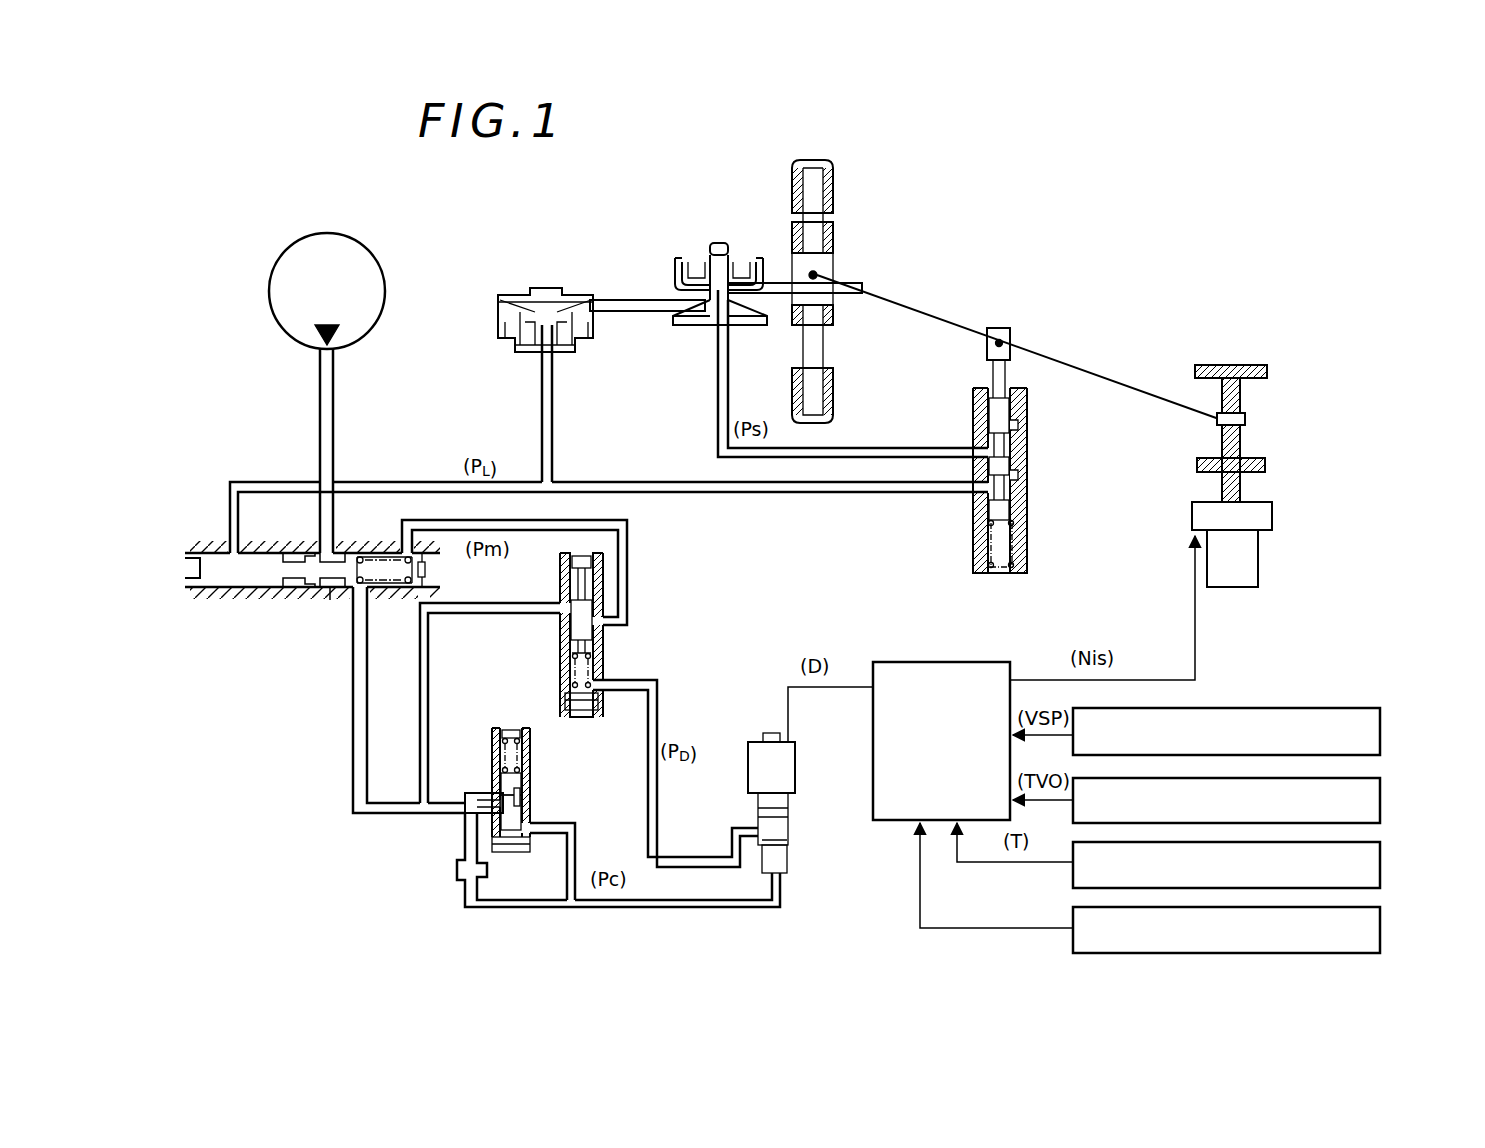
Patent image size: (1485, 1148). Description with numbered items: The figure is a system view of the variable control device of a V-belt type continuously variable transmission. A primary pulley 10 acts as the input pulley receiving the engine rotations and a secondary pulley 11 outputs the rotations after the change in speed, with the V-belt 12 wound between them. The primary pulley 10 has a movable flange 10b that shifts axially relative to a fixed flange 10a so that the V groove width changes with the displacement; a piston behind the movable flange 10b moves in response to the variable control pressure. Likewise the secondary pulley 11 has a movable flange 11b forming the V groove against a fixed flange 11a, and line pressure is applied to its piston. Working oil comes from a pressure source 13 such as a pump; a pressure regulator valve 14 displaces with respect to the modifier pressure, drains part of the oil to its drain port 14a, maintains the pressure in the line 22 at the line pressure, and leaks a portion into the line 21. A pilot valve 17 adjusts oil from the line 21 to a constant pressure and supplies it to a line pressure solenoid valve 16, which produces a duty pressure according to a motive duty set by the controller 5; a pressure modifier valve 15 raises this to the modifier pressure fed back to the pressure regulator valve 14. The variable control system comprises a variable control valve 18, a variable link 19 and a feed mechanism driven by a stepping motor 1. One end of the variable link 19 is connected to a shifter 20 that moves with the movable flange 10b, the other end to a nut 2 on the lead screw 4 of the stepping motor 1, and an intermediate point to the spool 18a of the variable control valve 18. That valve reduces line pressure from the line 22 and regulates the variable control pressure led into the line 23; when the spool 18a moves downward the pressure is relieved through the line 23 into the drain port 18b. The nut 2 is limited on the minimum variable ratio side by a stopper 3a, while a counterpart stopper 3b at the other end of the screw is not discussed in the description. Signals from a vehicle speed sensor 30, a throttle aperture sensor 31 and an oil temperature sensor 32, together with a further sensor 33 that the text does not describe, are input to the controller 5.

The stepping motor 1 is at (1259, 555).
The nut 2 is at (1246, 418).
The stopper 3a is at (1266, 466).
The upper stopper plate 3b is at (1266, 367).
The lead screw 4 is at (1241, 440).
The controller 5 is at (920, 662).
The primary pulley 10 is at (728, 272).
The fixed flange 10a is at (745, 326).
The movable flange 10b is at (730, 255).
The secondary pulley 11 is at (515, 333).
The fixed flange 11a is at (512, 295).
The movable flange 11b is at (500, 326).
The V-belt 12 is at (628, 300).
The pressure source 13 is at (346, 232).
The pressure regulator valve 14 is at (312, 607).
The valve seat 14a is at (310, 600).
The pressure modifier valve 15 is at (614, 657).
The line pressure solenoid valve 16 is at (796, 785).
The pilot valve 17 is at (535, 771).
The variable control valve 18 is at (1042, 419).
The spool 18a is at (1000, 327).
The drain port 18b is at (1020, 428).
The variable link 19 is at (1110, 376).
The shifter 20 is at (838, 268).
The line 21 is at (417, 787).
The line 22 is at (850, 494).
The variable line 23 is at (900, 447).
The vehicle speed sensor 30 is at (1381, 728).
The throttle aperture sensor 31 is at (1381, 792).
The oil temperature sensor 32 is at (1381, 855).
The park brake sensor 33 is at (1381, 920).